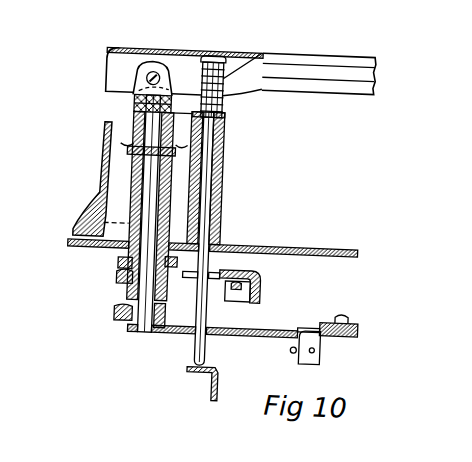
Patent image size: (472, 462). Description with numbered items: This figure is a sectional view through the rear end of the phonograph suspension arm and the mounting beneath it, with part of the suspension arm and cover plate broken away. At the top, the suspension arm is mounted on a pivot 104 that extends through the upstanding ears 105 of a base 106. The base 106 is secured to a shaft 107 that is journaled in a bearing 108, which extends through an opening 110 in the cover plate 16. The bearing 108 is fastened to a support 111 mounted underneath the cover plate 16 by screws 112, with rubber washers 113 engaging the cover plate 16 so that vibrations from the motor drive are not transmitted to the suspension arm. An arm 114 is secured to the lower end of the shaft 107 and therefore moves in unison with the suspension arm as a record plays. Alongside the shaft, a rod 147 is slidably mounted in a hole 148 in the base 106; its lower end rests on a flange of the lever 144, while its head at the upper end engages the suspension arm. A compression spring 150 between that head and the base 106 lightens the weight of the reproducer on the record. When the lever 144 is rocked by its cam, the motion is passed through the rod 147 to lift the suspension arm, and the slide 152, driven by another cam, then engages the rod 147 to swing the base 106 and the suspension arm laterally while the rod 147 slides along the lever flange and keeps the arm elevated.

The cover plate 16 is at (283, 244).
The pivot 104 is at (156, 73).
The upstanding ears 105 is at (138, 69).
The base 106 is at (102, 159).
The shaft 107 is at (132, 295).
The bearing 108 is at (132, 212).
The opening 110 is at (156, 230).
The support 111 is at (116, 265).
The screws 112 is at (127, 225).
The rubber washers 113 is at (120, 251).
The arm 114 is at (180, 328).
The lever 144 is at (225, 379).
The rod 147 is at (202, 197).
The hole 148 is at (218, 159).
The compression spring 150 is at (249, 51).
The slide 152 is at (261, 281).